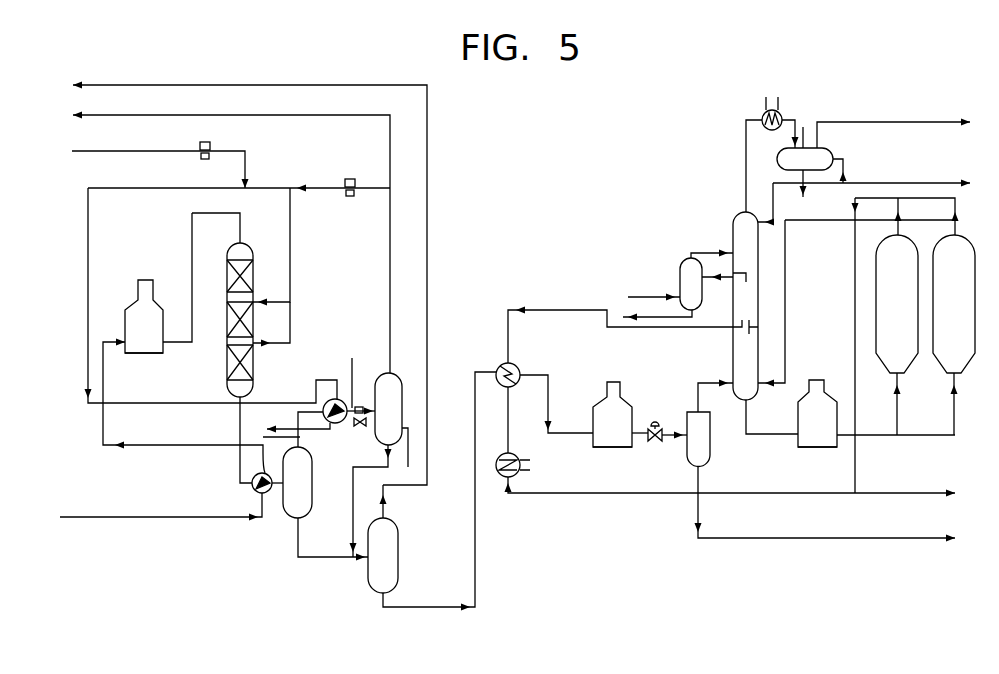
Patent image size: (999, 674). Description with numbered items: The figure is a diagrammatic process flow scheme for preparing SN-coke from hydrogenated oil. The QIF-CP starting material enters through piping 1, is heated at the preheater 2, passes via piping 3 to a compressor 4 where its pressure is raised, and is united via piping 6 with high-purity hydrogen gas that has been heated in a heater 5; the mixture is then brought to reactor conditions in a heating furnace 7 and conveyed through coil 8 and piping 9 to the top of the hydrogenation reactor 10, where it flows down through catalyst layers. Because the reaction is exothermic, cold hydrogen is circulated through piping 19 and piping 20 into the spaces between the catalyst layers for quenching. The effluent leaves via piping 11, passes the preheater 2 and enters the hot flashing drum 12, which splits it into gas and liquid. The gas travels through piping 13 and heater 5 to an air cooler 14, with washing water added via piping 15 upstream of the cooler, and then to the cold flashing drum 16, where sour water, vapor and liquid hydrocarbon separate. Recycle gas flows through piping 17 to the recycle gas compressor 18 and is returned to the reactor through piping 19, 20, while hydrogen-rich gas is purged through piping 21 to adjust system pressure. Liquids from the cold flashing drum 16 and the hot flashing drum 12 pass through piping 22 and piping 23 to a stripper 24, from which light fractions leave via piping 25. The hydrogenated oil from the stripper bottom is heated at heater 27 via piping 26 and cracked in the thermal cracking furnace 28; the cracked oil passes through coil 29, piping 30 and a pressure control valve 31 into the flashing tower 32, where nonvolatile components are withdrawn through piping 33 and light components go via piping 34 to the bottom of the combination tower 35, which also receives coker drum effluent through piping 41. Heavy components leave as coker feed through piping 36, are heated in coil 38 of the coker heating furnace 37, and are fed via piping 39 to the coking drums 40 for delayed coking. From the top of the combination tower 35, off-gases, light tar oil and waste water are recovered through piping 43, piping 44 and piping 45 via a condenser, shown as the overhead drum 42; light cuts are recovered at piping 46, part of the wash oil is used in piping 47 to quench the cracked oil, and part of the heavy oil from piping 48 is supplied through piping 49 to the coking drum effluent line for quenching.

The piping 1 is at (190, 518).
The preheater 2 is at (252, 488).
The piping 3 is at (118, 153).
The compressor 4 is at (198, 158).
The heater 5 is at (342, 424).
The piping 6 is at (150, 447).
The heating furnace 7 is at (130, 312).
The coil 8 is at (145, 353).
The piping 9 is at (191, 272).
The hydrogenation reactor 10 is at (228, 248).
The piping 11 is at (237, 422).
The hot flashing drum 12 is at (312, 510).
The piping 13 is at (300, 416).
The air cooler 14 is at (362, 428).
The piping 15 is at (352, 368).
The cold flashing drum 16 is at (402, 380).
The piping 17 is at (390, 305).
The recycle gas compressor 18 is at (350, 200).
The piping 19 is at (271, 247).
The piping 20 is at (271, 324).
The piping 21 is at (390, 168).
The piping 22 is at (345, 557).
The piping 23 is at (353, 505).
The stripper 24 is at (398, 560).
The piping 25 is at (427, 213).
The piping 26 is at (475, 595).
The heater 27 is at (520, 366).
The thermal cracking furnace 28 is at (600, 407).
The coil 29 is at (612, 447).
The piping 30 is at (642, 440).
The pressure control valve 31 is at (656, 446).
The flashing tower 32 is at (686, 412).
The piping 33 is at (700, 508).
The piping 34 is at (703, 400).
The combination tower 35 is at (740, 212).
The piping 36 is at (747, 406).
The coker heating furnace 37 is at (808, 395).
The coil 38 is at (818, 447).
The piping 39 is at (880, 437).
The coking drums 40 is at (878, 316).
The piping 41 is at (785, 331).
The reflux drum 42 is at (820, 161).
The piping 43 is at (885, 122).
The piping 44 is at (890, 183).
The piping 45 is at (808, 188).
The piping 46 is at (650, 316).
The piping 47 is at (637, 437).
The piping 48 is at (710, 327).
The piping 49 is at (854, 283).